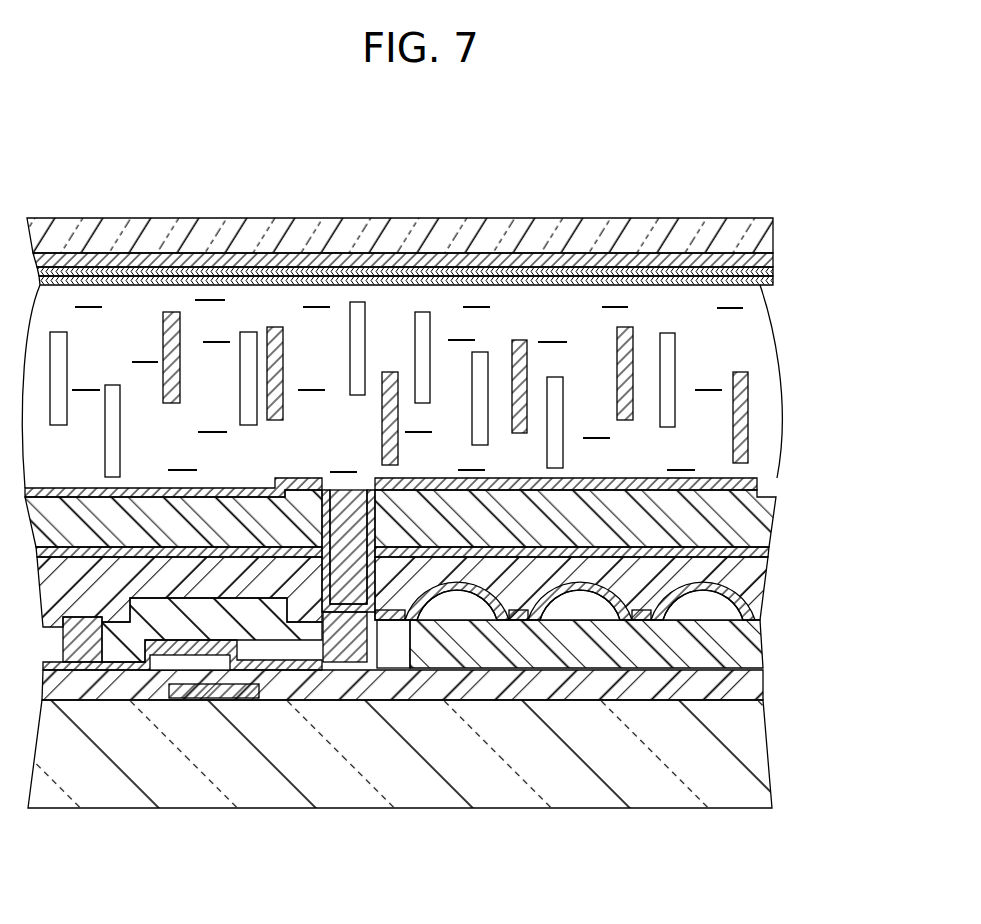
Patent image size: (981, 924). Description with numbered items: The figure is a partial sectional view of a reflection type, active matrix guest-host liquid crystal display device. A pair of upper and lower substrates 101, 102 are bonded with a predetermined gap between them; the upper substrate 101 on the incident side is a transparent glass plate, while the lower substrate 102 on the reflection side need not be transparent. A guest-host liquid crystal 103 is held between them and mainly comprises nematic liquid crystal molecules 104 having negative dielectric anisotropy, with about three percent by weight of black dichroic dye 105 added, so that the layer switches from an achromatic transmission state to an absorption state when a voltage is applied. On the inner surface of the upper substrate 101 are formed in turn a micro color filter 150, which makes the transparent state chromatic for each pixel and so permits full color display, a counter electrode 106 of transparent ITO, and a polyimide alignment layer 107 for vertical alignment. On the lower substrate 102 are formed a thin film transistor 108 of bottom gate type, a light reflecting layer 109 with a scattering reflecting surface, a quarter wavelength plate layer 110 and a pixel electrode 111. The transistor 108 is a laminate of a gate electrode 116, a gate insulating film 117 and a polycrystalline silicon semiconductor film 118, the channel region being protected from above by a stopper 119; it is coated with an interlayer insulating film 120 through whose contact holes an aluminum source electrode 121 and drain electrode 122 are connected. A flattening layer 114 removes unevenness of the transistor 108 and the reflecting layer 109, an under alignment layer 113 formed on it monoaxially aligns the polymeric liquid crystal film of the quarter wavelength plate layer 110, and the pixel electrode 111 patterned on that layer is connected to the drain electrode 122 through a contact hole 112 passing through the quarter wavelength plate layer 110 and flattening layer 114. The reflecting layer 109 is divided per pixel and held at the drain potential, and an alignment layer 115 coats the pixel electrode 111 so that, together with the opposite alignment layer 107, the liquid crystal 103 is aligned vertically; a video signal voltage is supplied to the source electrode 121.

The upper substrate 101 is at (757, 228).
The micro color filter 150 is at (767, 260).
The counter electrode 106 is at (760, 271).
The alignment layer 107 is at (762, 280).
The guest-host liquid crystal 103 is at (745, 328).
The nematic liquid crystal molecules 104 is at (668, 349).
The black dichroic dye 105 is at (747, 397).
The alignment layer 115 is at (757, 480).
The pixel electrode 111 is at (760, 500).
The quarter wavelength plate layer 110 is at (748, 532).
The under alignment layer 113 is at (747, 578).
The flattening layer 114 is at (747, 596).
The light reflecting layer 109 is at (757, 613).
The interlayer insulating film 120 is at (748, 652).
The gate insulating film 117 is at (750, 690).
The lower substrate 102 is at (760, 755).
The source electrode 121 is at (78, 663).
The thin film transistor 108 is at (175, 702).
The gate electrode 116 is at (210, 700).
The stopper 119 is at (270, 655).
The semiconductor film 118 is at (345, 665).
The drain electrode 122 is at (373, 655).
The contact hole 112 is at (410, 668).